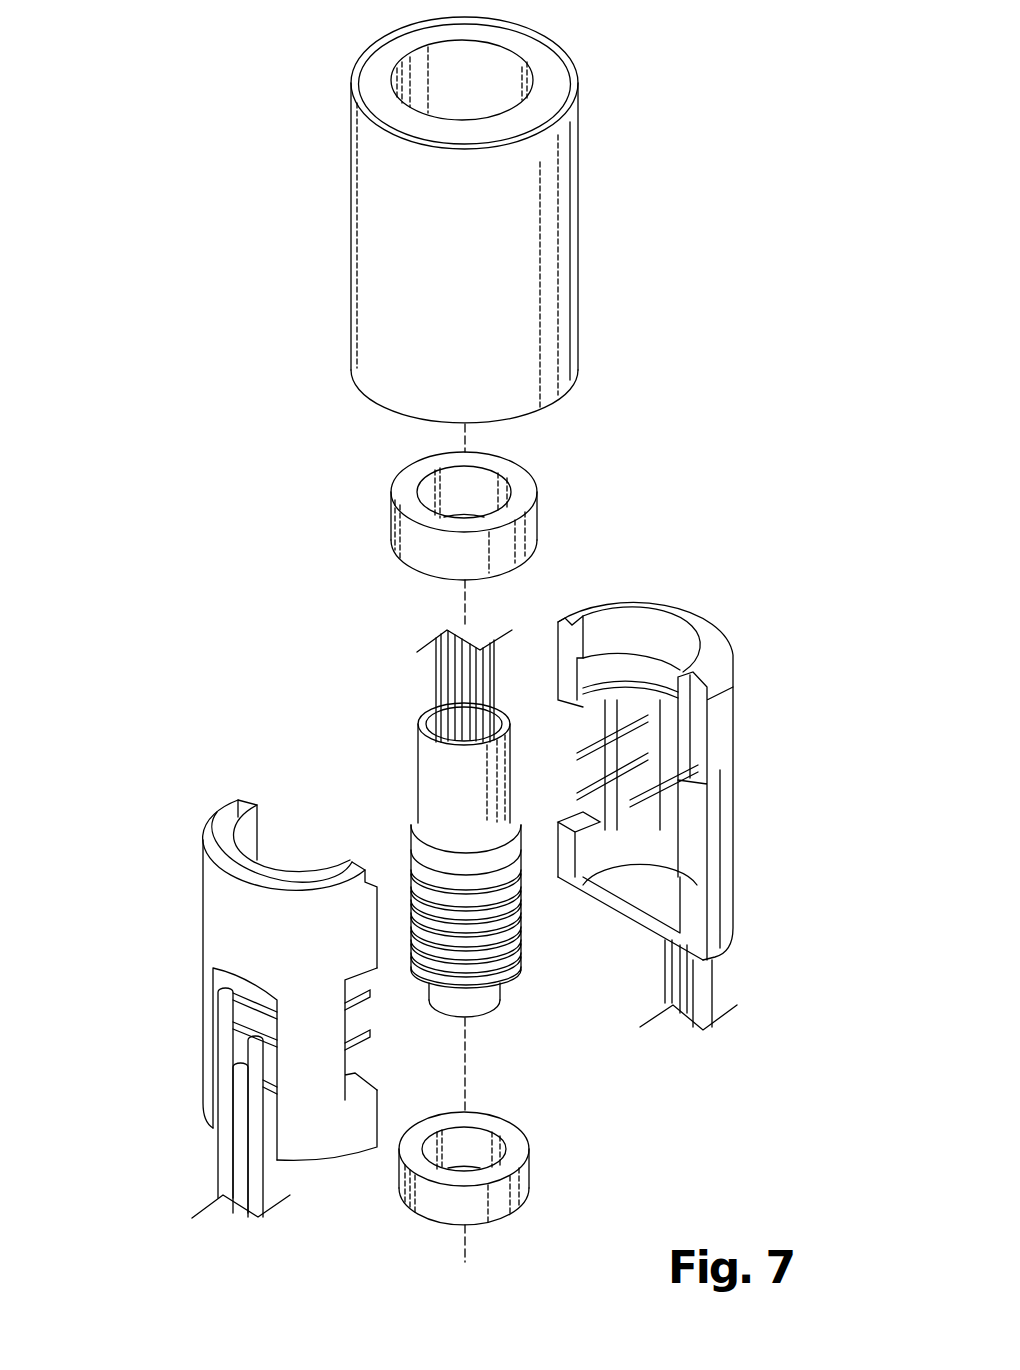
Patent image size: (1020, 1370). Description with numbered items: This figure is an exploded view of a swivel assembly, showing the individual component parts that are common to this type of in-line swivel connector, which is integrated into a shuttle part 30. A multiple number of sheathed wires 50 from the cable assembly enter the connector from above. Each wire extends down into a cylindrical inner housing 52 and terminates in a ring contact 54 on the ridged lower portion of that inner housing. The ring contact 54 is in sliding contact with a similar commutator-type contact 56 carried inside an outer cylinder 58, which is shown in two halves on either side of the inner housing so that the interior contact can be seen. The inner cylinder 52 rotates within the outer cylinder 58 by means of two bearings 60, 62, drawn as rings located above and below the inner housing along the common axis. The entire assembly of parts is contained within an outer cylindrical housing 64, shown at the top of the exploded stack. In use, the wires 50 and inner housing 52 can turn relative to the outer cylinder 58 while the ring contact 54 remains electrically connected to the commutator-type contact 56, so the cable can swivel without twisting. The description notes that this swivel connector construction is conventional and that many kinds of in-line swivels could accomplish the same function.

The shuttle part 30 is at (150, 455).
The sheathed wires 50 is at (437, 689).
The cylindrical inner housing 52 is at (418, 790).
The ring contact 54 is at (516, 960).
The commutator-type contact 56 is at (657, 865).
The outer cylinder 58 is at (218, 908).
The bearing 60 is at (545, 517).
The bearing 62 is at (432, 1207).
The outer cylindrical housing 64 is at (578, 193).